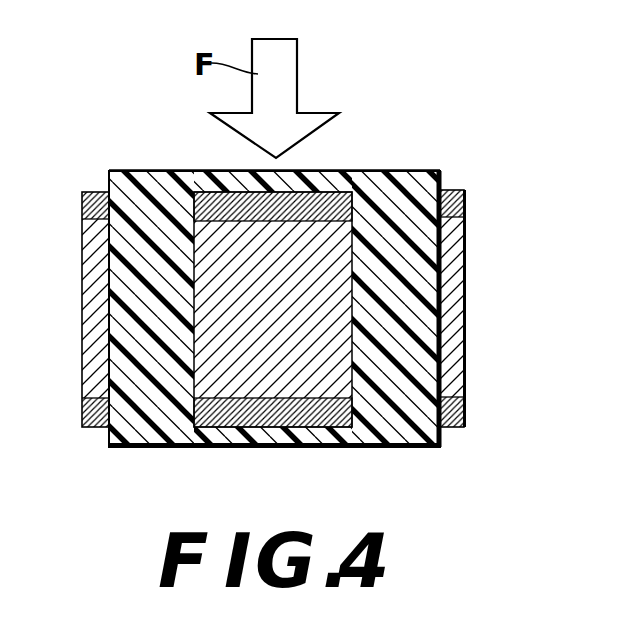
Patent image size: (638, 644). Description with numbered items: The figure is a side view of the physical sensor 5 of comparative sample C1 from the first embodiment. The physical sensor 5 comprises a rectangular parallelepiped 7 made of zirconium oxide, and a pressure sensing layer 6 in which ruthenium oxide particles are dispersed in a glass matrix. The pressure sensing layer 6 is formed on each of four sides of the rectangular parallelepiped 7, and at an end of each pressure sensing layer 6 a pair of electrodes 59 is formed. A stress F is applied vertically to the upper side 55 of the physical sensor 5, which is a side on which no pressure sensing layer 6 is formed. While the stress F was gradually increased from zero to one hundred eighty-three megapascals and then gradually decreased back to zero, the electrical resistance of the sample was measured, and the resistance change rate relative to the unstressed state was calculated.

The physical sensor 5 is at (447, 150).
The upper side 55 is at (388, 168).
The rectangular parallelepiped 7 is at (425, 238).
The pressure sensing layer 6 is at (343, 287).
The electrodes 59 is at (205, 207).